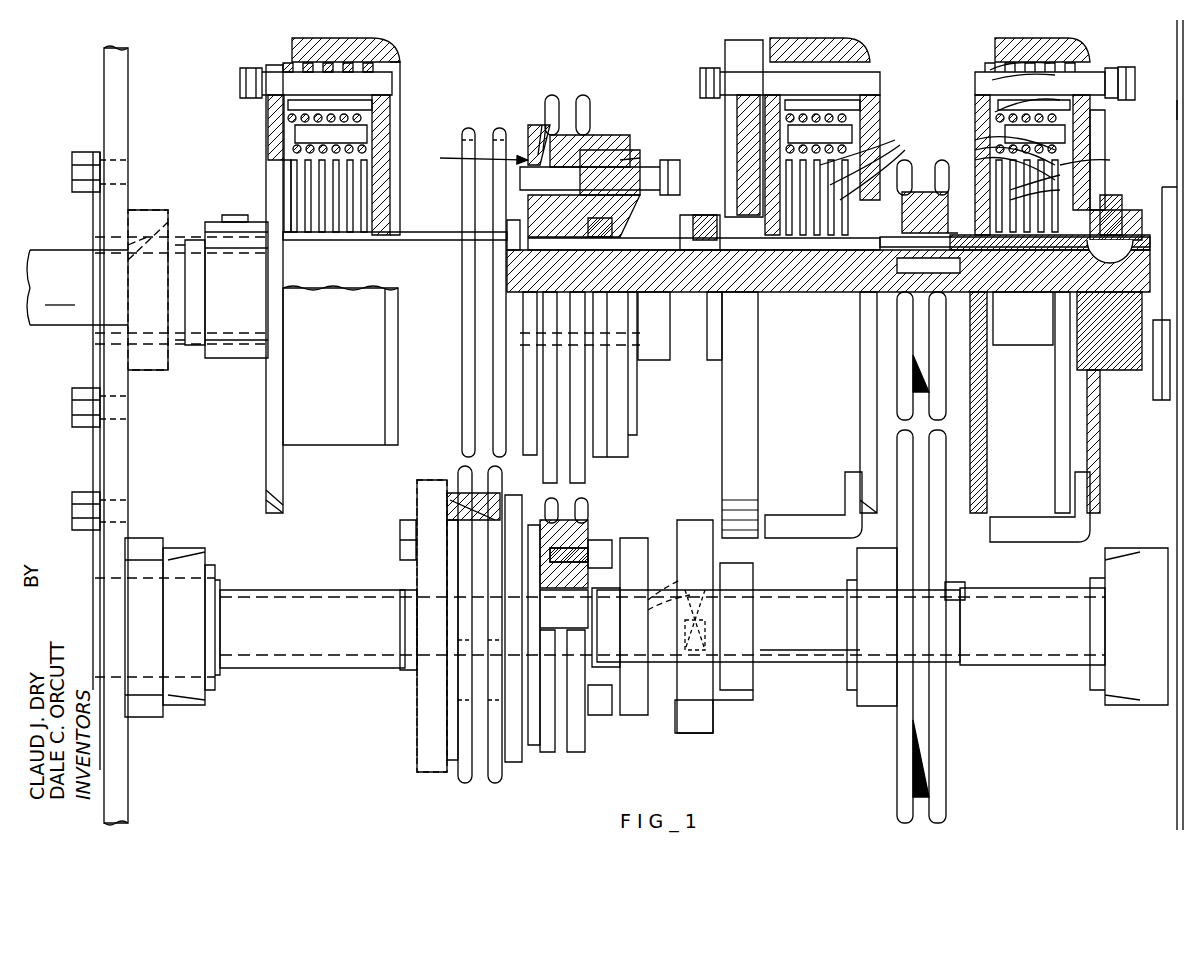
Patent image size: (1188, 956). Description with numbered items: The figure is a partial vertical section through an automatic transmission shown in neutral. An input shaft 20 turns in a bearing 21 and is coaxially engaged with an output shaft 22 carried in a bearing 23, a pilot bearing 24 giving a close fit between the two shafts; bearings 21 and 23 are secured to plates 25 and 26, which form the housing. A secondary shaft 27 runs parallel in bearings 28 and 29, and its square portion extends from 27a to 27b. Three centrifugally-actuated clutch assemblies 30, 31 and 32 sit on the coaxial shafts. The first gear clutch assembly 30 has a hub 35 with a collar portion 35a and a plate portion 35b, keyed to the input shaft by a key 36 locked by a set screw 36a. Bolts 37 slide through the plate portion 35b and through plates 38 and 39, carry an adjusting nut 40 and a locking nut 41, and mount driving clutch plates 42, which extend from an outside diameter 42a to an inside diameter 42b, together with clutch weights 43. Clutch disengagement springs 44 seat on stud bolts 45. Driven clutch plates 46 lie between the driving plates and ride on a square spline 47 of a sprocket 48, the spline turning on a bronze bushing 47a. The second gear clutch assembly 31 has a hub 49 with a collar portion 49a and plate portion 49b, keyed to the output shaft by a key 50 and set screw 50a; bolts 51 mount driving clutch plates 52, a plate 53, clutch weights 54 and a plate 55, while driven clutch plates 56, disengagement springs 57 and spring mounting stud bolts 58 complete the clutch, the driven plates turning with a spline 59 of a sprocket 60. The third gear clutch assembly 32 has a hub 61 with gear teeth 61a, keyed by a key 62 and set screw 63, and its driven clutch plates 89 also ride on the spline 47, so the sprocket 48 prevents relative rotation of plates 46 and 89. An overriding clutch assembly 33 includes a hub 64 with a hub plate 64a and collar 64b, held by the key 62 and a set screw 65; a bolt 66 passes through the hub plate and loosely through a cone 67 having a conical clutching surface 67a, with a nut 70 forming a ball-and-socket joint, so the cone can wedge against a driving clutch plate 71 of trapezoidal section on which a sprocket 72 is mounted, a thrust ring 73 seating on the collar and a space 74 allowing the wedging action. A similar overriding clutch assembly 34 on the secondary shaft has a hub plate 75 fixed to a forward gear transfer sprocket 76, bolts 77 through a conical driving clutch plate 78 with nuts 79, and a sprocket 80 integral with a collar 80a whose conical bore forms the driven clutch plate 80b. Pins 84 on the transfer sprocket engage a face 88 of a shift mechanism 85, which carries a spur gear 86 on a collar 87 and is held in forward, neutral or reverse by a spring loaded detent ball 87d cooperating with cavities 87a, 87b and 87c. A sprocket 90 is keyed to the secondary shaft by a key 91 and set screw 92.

The input shaft 20 is at (1085, 290).
The bearing 21 is at (1162, 175).
The output shaft 22 is at (193, 340).
The bearing 23 is at (145, 195).
The pilot bearing 24 is at (898, 235).
The plate 25 is at (1177, 80).
The plate 26 is at (128, 103).
The secondary shaft 27 is at (270, 572).
The end of square portion of transfer shaft 27a is at (820, 662).
The end of square portion of transfer shaft 27b is at (612, 640).
The bearing 28 is at (1140, 548).
The bearing 29 is at (150, 538).
The first gear clutch assembly 30 is at (1049, 173).
The clutch assembly 31 is at (335, 119).
The clutch assembly 32 is at (808, 119).
The overriding clutch assembly 33 is at (577, 138).
The overriding clutch assembly 34 is at (486, 610).
The hub 35 is at (1110, 160).
The collar portion 35a is at (1135, 210).
The plate portion 35b is at (1090, 115).
The key 36 is at (1110, 249).
The set screw 36a is at (1112, 195).
The bolts 37 is at (1040, 79).
The plate 38 is at (975, 120).
The plate 39 is at (1105, 137).
The adjusting nut 40 is at (1112, 68).
The locking nut 41 is at (1128, 67).
The driving clutch plates 42 is at (992, 80).
The outside diameter 42a is at (990, 70).
The inside diameter 42b is at (1010, 195).
The clutch weights 43 is at (1050, 38).
The clutch disengagement springs 44 is at (995, 112).
The stud bolts 45 is at (1033, 126).
The driven clutch plates 46 is at (975, 140).
The square spline 47 is at (958, 233).
The bronze bushing 47a is at (1020, 292).
The sprocket 48 is at (946, 380).
The hub 49 is at (266, 205).
The collar portion 49a is at (181, 290).
The plate portion 49b is at (268, 140).
The key 50 is at (185, 240).
The set screw 50a is at (225, 215).
The bolts 51 is at (316, 83).
The driving clutch plates 52 is at (283, 65).
The plate 53 is at (345, 175).
The clutch weights 54 is at (330, 38).
The plate 55 is at (410, 143).
The driven clutch plates 56 is at (355, 195).
The clutch disengagement springs 57 is at (288, 117).
The spring mounting stud bolts 58 is at (330, 136).
The spline 59 is at (410, 232).
The sprocket 60 is at (470, 128).
The hub 61 is at (621, 387).
The gear teeth 61a is at (750, 40).
The key 62 is at (680, 215).
The set screw 63 is at (707, 215).
The hub 64 is at (535, 130).
The hub plate 64a is at (540, 120).
The collar 64b is at (544, 122).
The set screw 65 is at (612, 225).
The bolt 66 is at (479, 156).
The cone 67 is at (630, 165).
The conical clutching surface 67a is at (632, 158).
The nut 70 is at (690, 158).
The bearing material of trapezoidal cross section 71 is at (600, 140).
The sprocket 72 is at (583, 95).
The thrust ring 73 is at (550, 95).
The space 74 is at (528, 210).
The hub plate 75 is at (518, 760).
The forward gear transfer sprocket 76 is at (585, 500).
The bolts 77 is at (400, 545).
The conical driving clutch plate 78 is at (432, 626).
The nut 79 is at (400, 570).
The sprocket 80 is at (490, 470).
The collar 80a is at (417, 700).
The driven clutch plate 80b is at (455, 500).
The pins 84 is at (600, 540).
The shift mechanism 85 is at (725, 700).
The spur gear 86 is at (690, 733).
The collar 87 is at (691, 640).
The cylindrical cavity 87a is at (665, 525).
The cylindrical cavity 87b is at (654, 603).
The cylindrical cavity 87c is at (740, 626).
The spring loaded detent ball 87d is at (696, 627).
The face 88 is at (640, 538).
The driven clutch plates 89 is at (863, 159).
The sprocket 90 is at (946, 750).
The key 91 is at (955, 582).
The set screw 92 is at (872, 548).